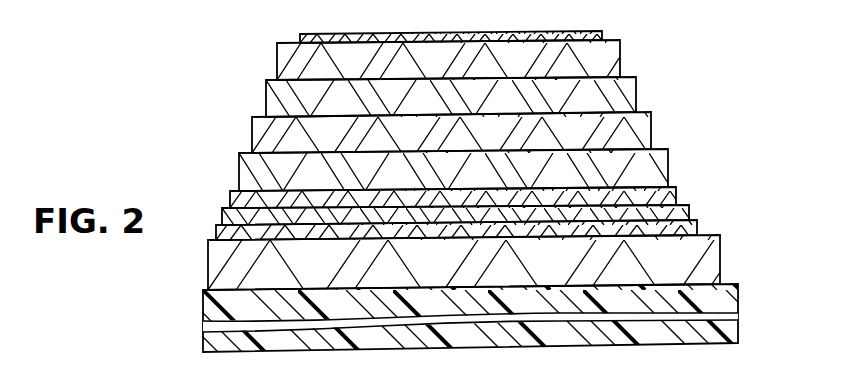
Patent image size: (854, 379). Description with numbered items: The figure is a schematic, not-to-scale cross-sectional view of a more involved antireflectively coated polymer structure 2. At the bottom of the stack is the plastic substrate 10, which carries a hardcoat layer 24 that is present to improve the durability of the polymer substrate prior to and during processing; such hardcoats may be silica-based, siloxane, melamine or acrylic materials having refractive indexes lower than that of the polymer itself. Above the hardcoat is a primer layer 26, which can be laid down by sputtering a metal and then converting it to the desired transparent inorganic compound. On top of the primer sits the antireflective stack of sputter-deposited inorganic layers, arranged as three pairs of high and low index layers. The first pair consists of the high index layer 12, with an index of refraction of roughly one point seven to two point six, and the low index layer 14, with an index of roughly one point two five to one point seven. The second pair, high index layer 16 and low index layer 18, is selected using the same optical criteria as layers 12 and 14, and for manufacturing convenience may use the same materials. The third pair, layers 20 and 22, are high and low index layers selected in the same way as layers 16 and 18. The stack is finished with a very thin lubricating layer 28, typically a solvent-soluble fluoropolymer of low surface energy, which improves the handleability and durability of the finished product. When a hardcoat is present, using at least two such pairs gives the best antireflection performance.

The antireflective polymer structure 2 is at (499, 182).
The substrate 10 is at (739, 303).
The high index layer 12 is at (690, 210).
The low index layer 14 is at (677, 198).
The high index layer 16 is at (669, 172).
The low index layer 18 is at (652, 138).
The high index layer 20 is at (637, 97).
The low index layer 22 is at (621, 60).
The hardcoat layer 24 is at (721, 263).
The primer layer 26 is at (698, 225).
The lubricating layer 28 is at (603, 32).